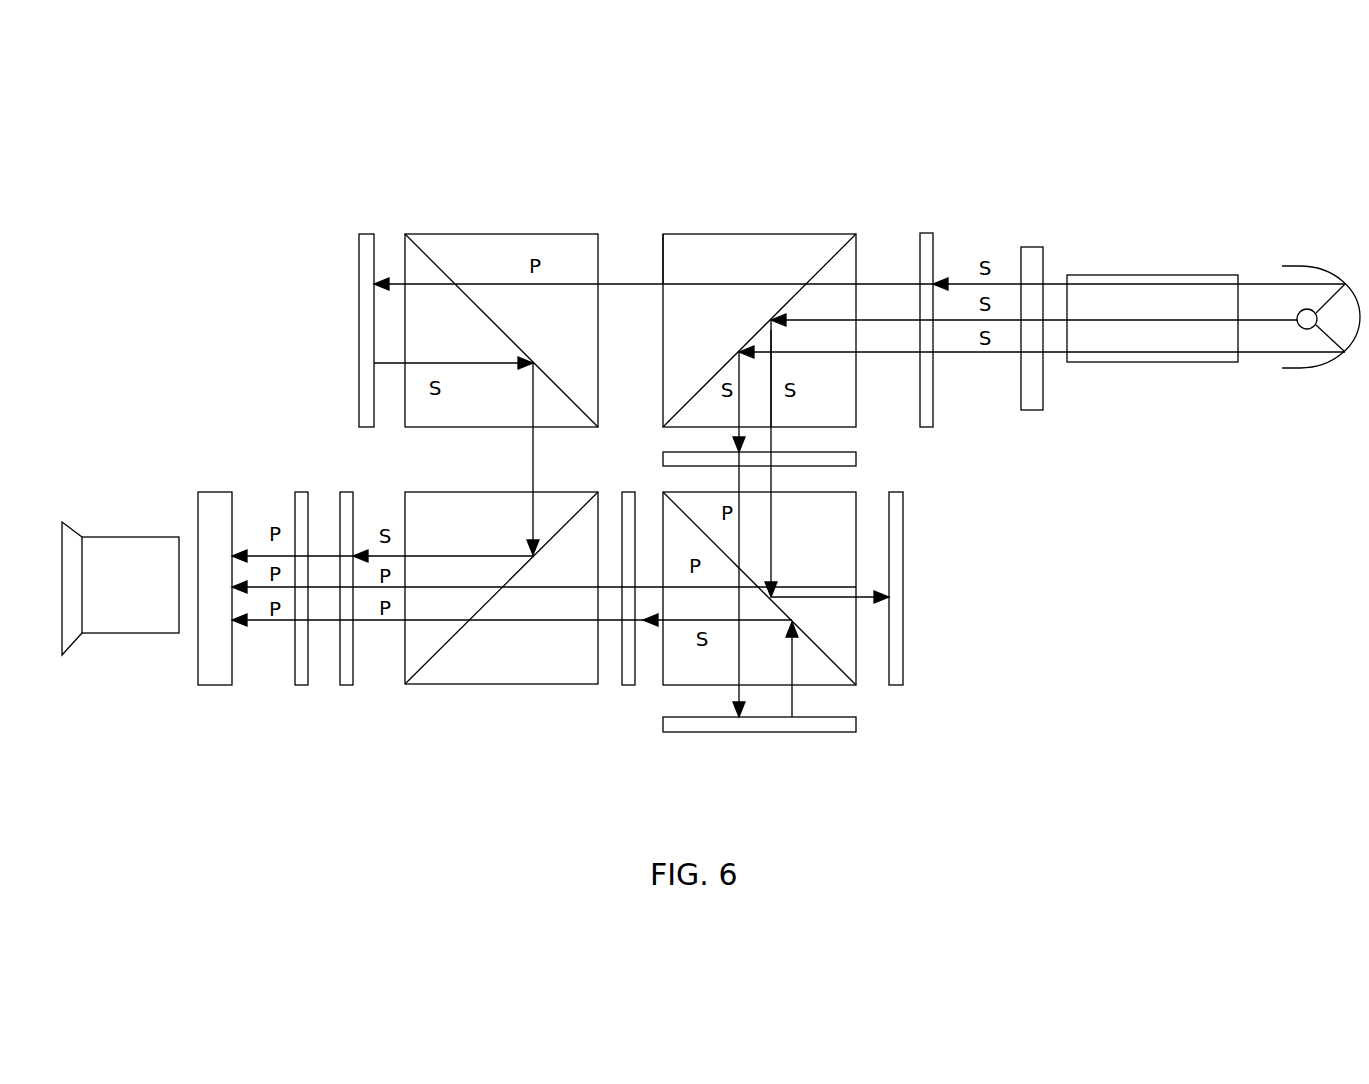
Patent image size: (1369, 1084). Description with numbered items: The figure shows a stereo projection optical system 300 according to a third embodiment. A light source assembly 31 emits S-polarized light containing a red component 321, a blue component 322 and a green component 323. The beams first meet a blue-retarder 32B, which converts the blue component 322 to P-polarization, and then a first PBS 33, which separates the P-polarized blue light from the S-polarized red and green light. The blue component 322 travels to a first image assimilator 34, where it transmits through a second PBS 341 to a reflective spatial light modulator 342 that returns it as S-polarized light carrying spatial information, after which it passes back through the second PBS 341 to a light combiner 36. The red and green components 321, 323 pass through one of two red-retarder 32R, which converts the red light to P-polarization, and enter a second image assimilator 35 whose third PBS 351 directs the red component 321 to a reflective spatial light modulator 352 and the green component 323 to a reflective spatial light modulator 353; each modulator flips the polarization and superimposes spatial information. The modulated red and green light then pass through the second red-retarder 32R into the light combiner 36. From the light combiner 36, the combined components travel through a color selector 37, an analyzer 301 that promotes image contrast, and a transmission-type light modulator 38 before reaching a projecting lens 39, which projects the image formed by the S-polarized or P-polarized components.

The stereo projection optical system 300 is at (757, 100).
The light source assembly 31 is at (1145, 232).
The blue-retarder 32B is at (927, 243).
The red-retarder 32R is at (847, 458).
The first PBS 33 is at (727, 250).
The red component 321 is at (770, 398).
The blue component 322 is at (614, 284).
The green component 323 is at (739, 408).
The first image assimilator 34 is at (478, 261).
The second PBS 341 is at (501, 292).
The reflective spatial light modulator 342 is at (367, 230).
The second image assimilator 35 is at (856, 634).
The third PBS 351 is at (856, 685).
The reflective spatial light modulator 352 is at (850, 732).
The reflective spatial light modulator 353 is at (895, 640).
The light combiner 36 is at (478, 672).
The color selector 37 is at (345, 680).
The transmission-type light modulator 38 is at (213, 680).
The projecting lens 39 is at (123, 522).
The analyzer 301 is at (298, 680).